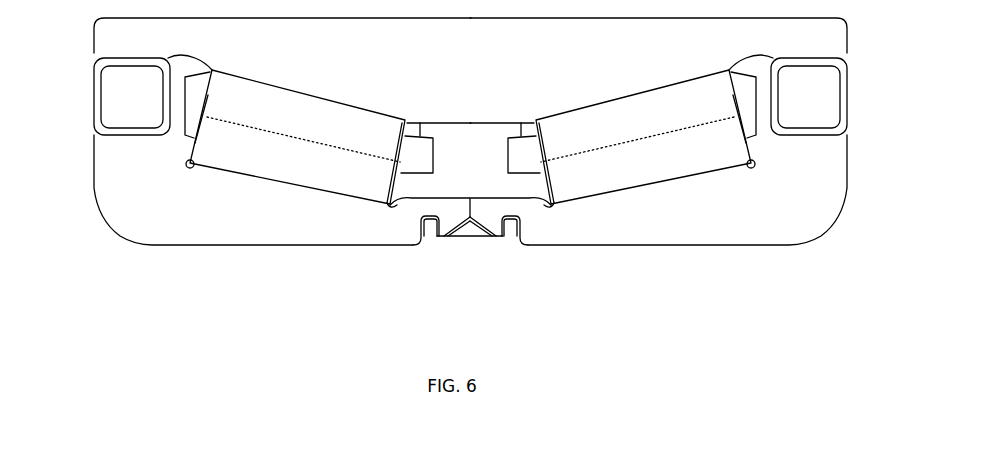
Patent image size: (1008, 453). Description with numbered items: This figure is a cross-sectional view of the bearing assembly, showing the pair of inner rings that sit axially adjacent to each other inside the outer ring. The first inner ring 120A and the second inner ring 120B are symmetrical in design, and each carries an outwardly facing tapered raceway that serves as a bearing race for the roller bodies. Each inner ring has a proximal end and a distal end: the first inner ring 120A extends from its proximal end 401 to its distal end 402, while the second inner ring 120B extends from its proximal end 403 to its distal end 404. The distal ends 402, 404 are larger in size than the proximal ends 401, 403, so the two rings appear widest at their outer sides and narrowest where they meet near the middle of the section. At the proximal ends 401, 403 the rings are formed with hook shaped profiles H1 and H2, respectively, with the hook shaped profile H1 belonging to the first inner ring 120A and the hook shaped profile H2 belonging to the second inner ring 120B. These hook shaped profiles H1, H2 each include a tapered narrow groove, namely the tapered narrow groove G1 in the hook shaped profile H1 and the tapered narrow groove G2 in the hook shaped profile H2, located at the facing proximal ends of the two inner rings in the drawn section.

The distal end 402 is at (135, 183).
The distal end 404 is at (805, 193).
The first inner ring 120A is at (247, 230).
The second inner ring 120B is at (670, 229).
The proximal end 401 is at (390, 226).
The proximal end 403 is at (550, 227).
The tapered narrow groove G1 is at (427, 225).
The tapered narrow groove G2 is at (517, 225).
The hook shaped profile H1 is at (450, 222).
The hook shaped profile H2 is at (487, 217).